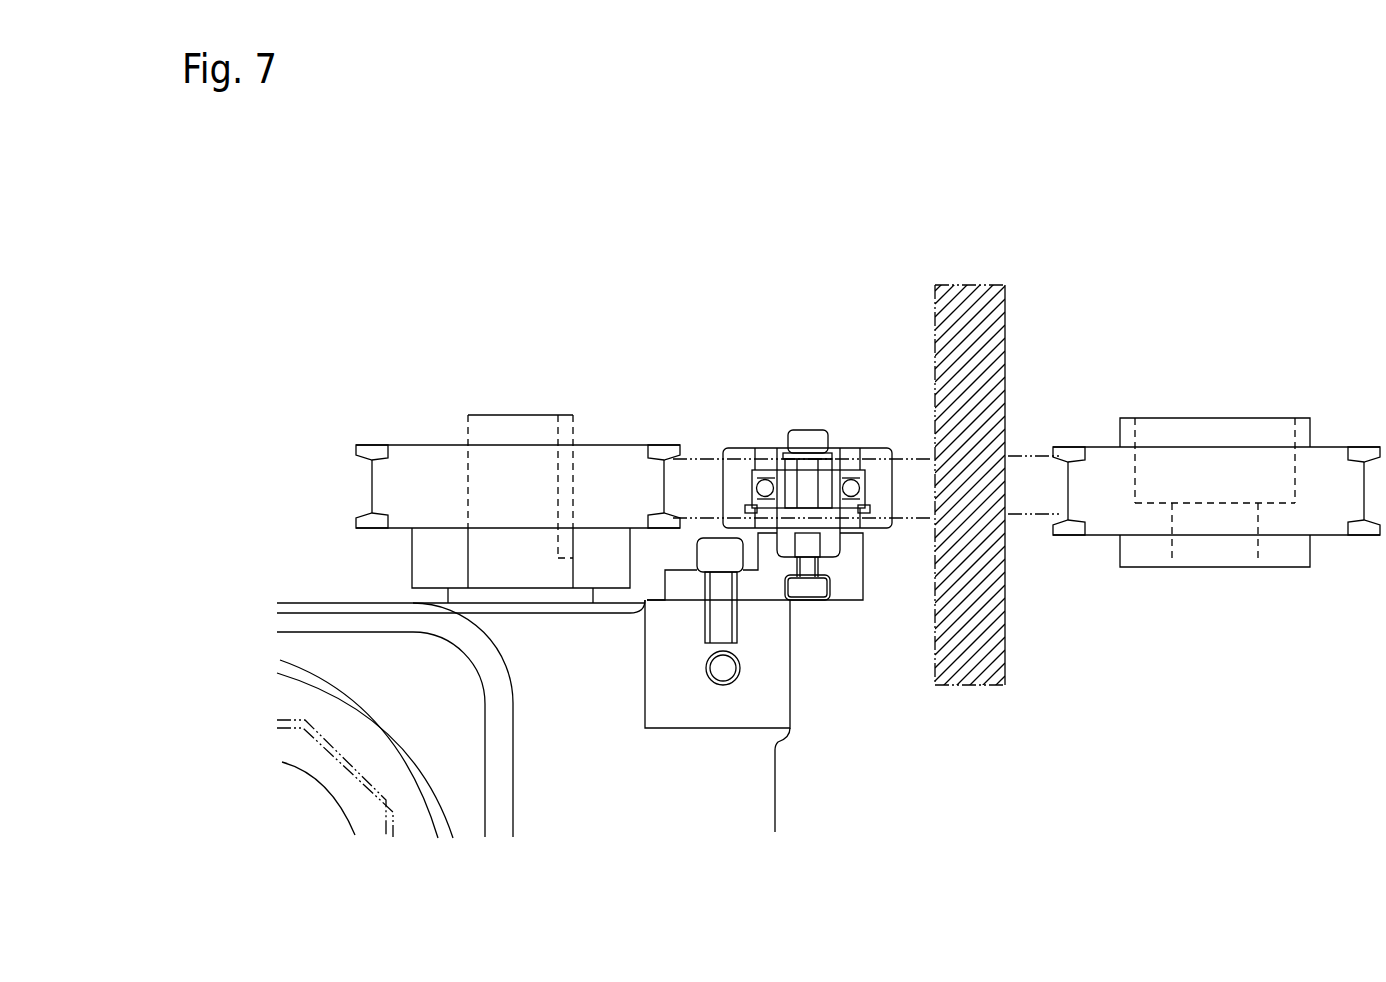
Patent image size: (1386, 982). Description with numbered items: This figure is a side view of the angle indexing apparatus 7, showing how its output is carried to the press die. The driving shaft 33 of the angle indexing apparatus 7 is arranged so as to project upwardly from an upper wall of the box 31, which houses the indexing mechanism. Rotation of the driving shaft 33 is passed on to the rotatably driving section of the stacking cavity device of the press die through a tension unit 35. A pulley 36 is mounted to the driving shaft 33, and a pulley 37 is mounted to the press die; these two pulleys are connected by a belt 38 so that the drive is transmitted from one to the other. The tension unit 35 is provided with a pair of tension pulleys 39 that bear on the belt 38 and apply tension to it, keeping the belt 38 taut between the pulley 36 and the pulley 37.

The angle indexing apparatus 7 is at (320, 567).
The box 31 is at (747, 783).
The driving shaft 33 is at (523, 433).
The tension unit 35 is at (792, 407).
The pulley 36 is at (427, 463).
The pulley 37 is at (1123, 423).
The belt 38 is at (910, 463).
The tension pulley 39 is at (730, 445).